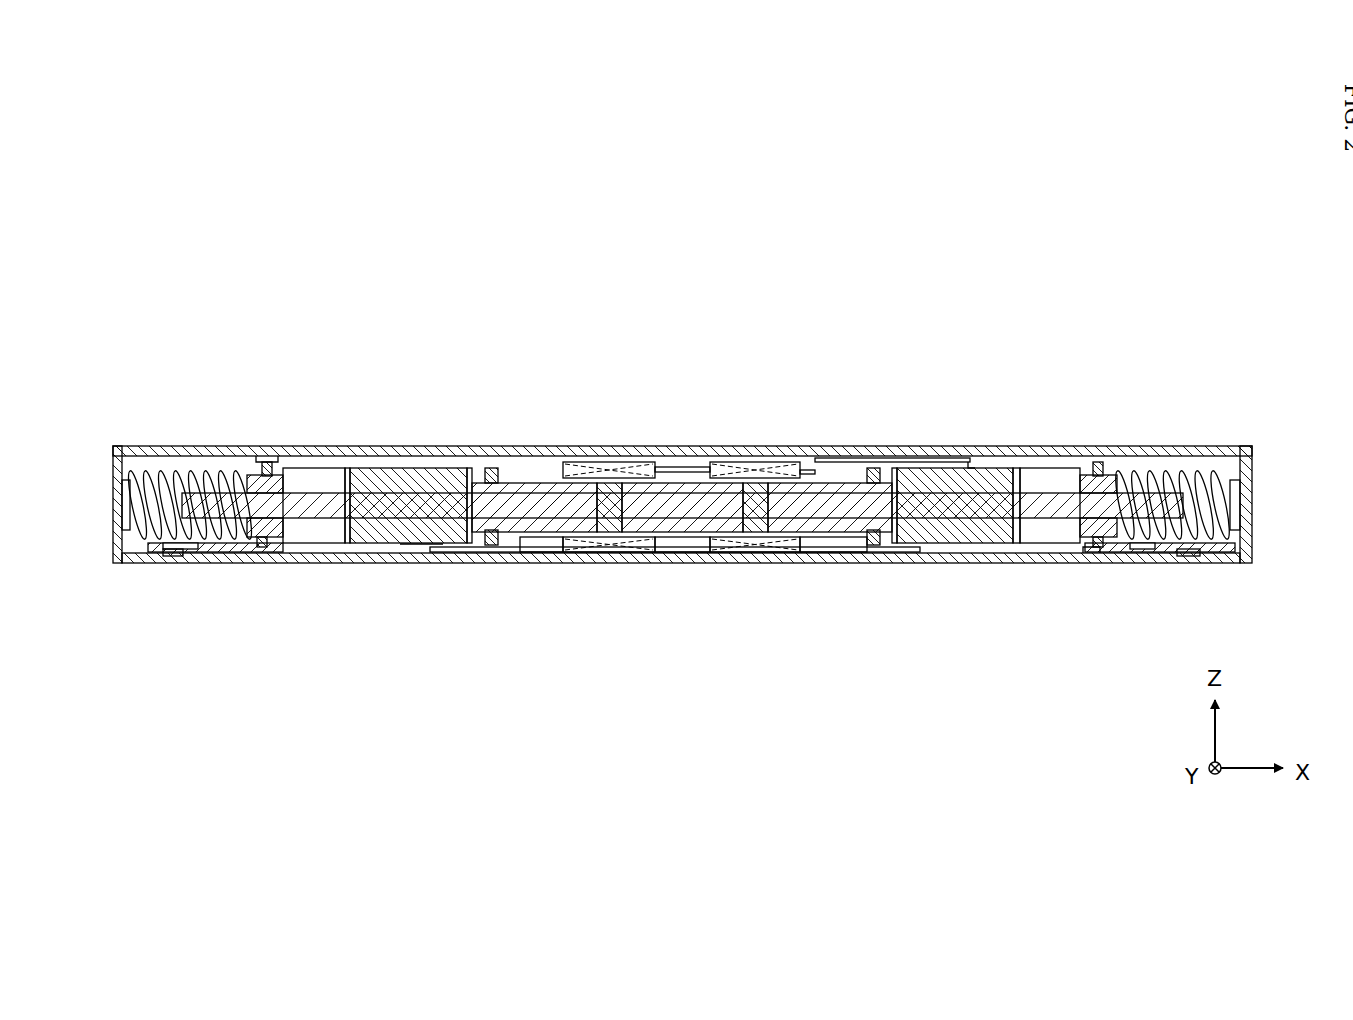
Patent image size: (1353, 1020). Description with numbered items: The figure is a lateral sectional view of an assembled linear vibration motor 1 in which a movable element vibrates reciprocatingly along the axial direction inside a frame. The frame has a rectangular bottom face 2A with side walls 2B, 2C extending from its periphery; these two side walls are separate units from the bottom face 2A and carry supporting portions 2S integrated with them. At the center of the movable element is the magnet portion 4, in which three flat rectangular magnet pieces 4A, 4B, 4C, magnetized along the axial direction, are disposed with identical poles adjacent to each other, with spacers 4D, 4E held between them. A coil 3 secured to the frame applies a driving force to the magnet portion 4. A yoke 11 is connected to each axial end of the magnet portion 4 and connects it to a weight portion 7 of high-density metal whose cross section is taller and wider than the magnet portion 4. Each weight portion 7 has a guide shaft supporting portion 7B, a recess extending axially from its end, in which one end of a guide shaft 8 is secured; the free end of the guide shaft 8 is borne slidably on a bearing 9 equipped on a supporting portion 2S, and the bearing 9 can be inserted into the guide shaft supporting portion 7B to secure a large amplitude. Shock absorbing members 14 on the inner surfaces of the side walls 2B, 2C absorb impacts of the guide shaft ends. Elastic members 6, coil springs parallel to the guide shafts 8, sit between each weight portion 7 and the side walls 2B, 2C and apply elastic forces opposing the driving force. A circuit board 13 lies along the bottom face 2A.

The linear vibration motor 1 is at (1005, 312).
The bottom face 2A is at (990, 563).
The side wall 2B is at (113, 470).
The side wall 2C is at (1252, 470).
The supporting portion 2S is at (266, 462).
The coil 3 is at (605, 462).
The magnet portion 4 is at (682, 579).
The magnet piece 4A is at (520, 537).
The magnet piece 4B is at (688, 535).
The magnet piece 4C is at (830, 555).
The spacer 4D is at (610, 535).
The spacer 4E is at (750, 535).
The elastic member 6 is at (198, 563).
The weight portion 7 is at (415, 468).
The guide shaft supporting portion 7B is at (330, 468).
The guide shaft 8 is at (316, 540).
The bearing 9 is at (262, 470).
The yoke 11 is at (490, 468).
The circuit board 13 is at (450, 548).
The shock absorbing member 14 is at (148, 470).